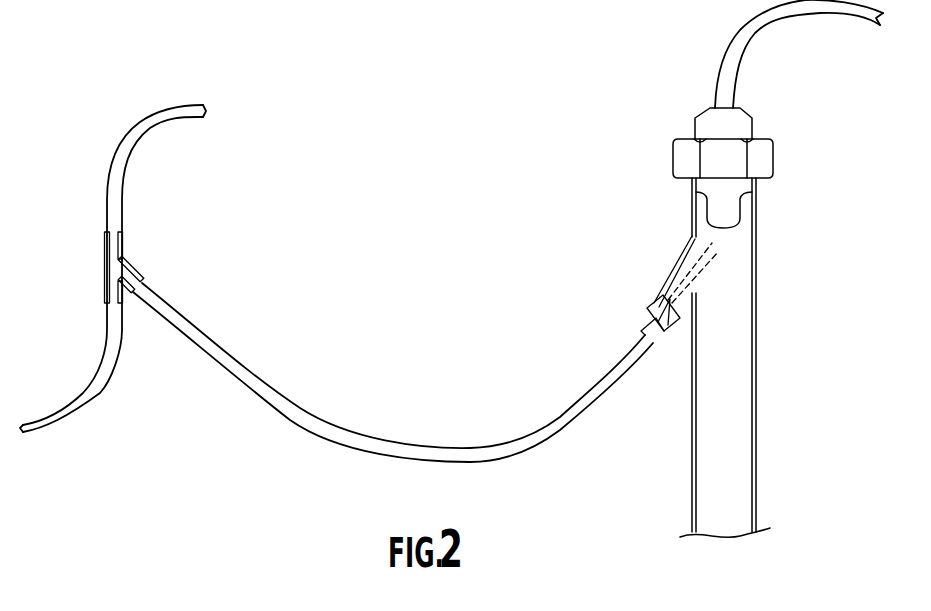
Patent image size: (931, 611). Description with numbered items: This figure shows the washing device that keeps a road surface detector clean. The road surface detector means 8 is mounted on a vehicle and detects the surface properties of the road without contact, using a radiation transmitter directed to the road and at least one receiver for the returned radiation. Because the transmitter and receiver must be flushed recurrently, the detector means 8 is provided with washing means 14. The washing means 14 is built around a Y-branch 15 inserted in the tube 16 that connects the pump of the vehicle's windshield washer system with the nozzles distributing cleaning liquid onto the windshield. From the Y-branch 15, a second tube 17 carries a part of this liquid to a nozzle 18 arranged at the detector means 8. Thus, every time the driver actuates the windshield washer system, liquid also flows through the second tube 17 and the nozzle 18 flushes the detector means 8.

The road surface detector means 8 is at (730, 203).
The washing means 14 is at (428, 300).
The Y-branch 15 is at (125, 263).
The tube 16 is at (143, 133).
The second tube 17 is at (317, 423).
The nozzle 18 is at (657, 300).